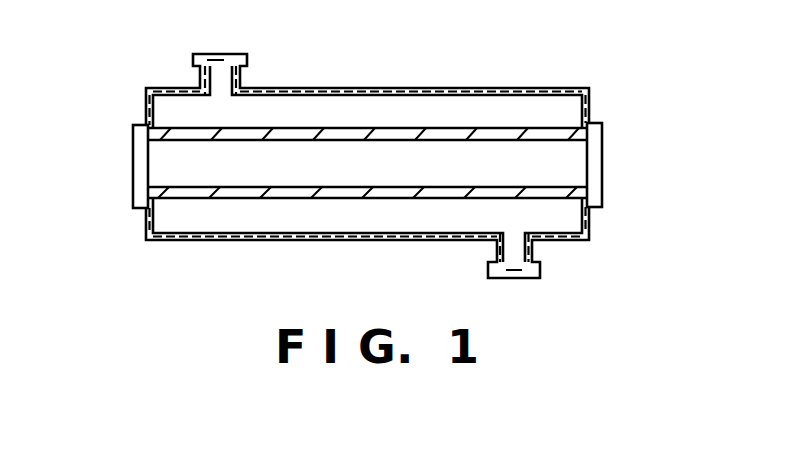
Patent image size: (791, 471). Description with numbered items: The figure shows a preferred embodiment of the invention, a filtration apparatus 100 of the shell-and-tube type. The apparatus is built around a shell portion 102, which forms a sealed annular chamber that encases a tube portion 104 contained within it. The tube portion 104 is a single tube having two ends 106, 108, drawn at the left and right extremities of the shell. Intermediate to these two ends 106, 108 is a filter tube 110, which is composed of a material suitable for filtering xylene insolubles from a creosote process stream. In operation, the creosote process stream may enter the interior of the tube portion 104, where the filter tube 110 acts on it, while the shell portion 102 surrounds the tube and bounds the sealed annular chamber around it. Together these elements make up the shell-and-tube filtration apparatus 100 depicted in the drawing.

The filtration apparatus 100 is at (373, 177).
The shell portion 102 is at (398, 90).
The tube portion 104 is at (367, 162).
The end 106 is at (133, 142).
The end 108 is at (602, 165).
The filter tube 110 is at (410, 197).